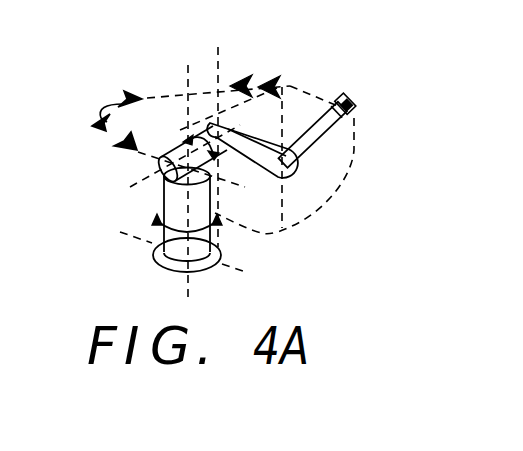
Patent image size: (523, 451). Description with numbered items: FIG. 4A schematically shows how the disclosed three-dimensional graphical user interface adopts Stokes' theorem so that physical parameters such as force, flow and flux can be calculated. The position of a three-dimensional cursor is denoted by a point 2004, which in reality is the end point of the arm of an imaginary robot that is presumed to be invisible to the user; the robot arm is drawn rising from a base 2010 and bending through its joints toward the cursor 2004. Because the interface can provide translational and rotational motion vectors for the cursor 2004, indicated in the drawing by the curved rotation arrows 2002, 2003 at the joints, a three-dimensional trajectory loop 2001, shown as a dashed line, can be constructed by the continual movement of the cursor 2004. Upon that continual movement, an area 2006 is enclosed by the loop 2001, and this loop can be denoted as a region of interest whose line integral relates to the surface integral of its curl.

The 3D trajectory loop 2001 is at (300, 90).
The second rotation direction 2002 is at (273, 77).
The third rotation direction 2003 is at (242, 76).
The 3D cursor 2004 is at (350, 111).
The area 2006 is at (316, 189).
The robot base 2010 is at (170, 237).